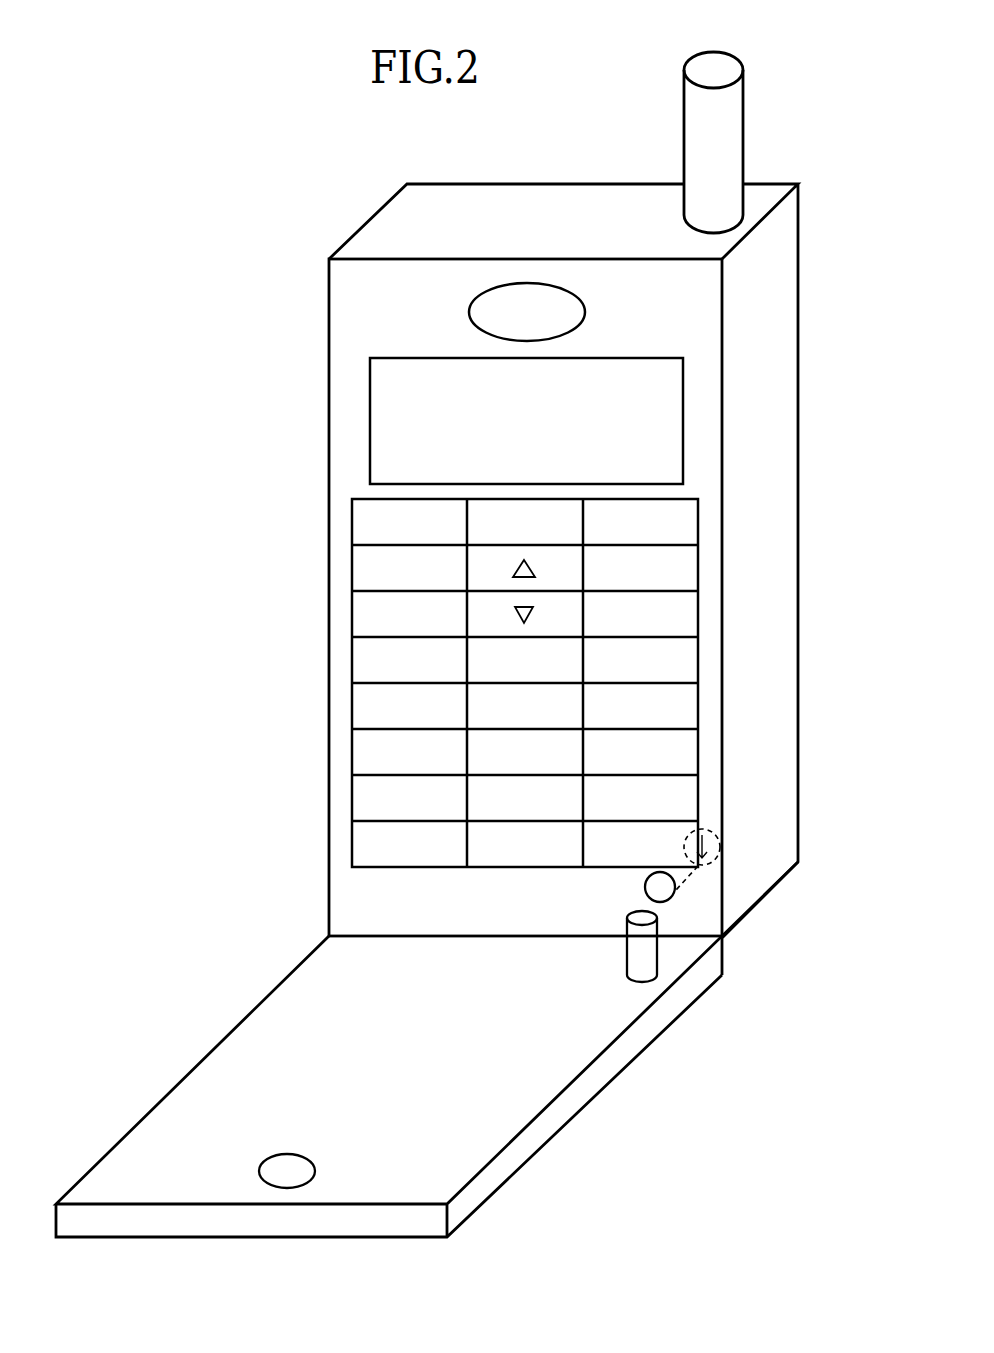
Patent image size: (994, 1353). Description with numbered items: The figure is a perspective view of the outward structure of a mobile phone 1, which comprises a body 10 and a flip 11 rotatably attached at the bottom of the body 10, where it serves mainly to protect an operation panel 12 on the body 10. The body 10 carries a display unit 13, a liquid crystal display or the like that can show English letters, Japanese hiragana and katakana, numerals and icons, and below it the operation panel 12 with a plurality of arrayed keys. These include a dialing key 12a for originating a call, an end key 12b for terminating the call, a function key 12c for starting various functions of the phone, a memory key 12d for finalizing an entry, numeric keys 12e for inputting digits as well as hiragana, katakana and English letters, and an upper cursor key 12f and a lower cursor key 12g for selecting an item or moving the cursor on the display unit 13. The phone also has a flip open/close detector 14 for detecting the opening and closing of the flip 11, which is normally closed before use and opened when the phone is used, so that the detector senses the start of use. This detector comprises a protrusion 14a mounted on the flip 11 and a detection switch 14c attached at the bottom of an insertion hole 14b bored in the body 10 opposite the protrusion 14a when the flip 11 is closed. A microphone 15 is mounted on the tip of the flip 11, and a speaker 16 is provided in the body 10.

The mobile phone 1 is at (810, 138).
The body 10 is at (383, 203).
The flip 11 is at (540, 1130).
The operation panel 12 is at (708, 705).
The dialing key 12a is at (352, 530).
The end key 12b is at (700, 523).
The function key 12c is at (362, 575).
The memory key 12d is at (358, 630).
The numeric keys 12e is at (317, 808).
The upper cursor key 12f is at (492, 575).
The lower cursor key 12g is at (555, 610).
The display unit 13 is at (683, 395).
The flip open/close detector 14 is at (840, 918).
The protrusion 14a is at (648, 963).
The insertion hole 14b is at (663, 892).
The detection switch 14c is at (712, 826).
The microphone 15 is at (283, 1180).
The speaker 16 is at (520, 295).